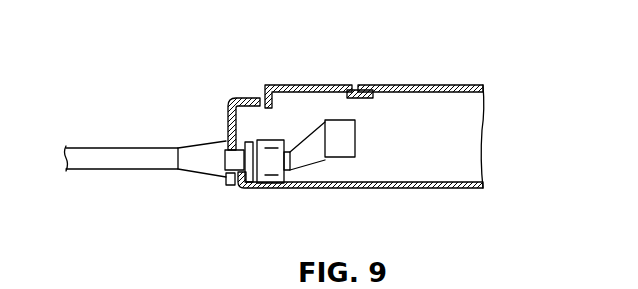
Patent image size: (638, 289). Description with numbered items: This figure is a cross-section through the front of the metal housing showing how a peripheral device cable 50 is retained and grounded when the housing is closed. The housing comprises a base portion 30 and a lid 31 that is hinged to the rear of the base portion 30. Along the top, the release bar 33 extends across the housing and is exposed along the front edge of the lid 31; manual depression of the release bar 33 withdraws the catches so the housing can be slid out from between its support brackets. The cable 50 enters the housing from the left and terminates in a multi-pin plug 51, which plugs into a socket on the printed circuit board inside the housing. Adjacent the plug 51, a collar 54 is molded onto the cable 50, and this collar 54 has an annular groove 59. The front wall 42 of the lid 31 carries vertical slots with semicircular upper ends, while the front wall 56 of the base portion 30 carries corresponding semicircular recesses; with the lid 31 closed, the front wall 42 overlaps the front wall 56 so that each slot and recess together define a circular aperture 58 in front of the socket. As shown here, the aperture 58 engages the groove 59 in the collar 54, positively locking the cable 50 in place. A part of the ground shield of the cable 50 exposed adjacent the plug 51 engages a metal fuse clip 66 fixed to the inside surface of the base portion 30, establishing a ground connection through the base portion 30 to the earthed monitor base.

The base portion 30 is at (424, 190).
The lid 31 is at (428, 84).
The release bar 33 is at (313, 84).
The front wall of the lid 42 is at (225, 110).
The peripheral device cable 50 is at (127, 152).
The multi-pin plug 51 is at (350, 148).
The collar 54 is at (197, 148).
The front wall of the base portion 56 is at (244, 189).
The circular aperture 58 is at (232, 163).
The annular groove 59 is at (241, 146).
The metal fuse clip 66 is at (283, 140).